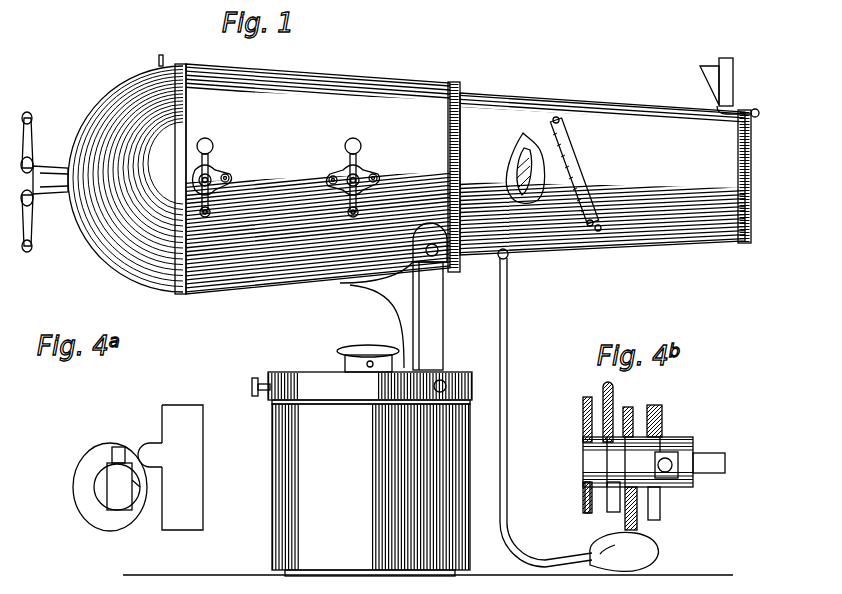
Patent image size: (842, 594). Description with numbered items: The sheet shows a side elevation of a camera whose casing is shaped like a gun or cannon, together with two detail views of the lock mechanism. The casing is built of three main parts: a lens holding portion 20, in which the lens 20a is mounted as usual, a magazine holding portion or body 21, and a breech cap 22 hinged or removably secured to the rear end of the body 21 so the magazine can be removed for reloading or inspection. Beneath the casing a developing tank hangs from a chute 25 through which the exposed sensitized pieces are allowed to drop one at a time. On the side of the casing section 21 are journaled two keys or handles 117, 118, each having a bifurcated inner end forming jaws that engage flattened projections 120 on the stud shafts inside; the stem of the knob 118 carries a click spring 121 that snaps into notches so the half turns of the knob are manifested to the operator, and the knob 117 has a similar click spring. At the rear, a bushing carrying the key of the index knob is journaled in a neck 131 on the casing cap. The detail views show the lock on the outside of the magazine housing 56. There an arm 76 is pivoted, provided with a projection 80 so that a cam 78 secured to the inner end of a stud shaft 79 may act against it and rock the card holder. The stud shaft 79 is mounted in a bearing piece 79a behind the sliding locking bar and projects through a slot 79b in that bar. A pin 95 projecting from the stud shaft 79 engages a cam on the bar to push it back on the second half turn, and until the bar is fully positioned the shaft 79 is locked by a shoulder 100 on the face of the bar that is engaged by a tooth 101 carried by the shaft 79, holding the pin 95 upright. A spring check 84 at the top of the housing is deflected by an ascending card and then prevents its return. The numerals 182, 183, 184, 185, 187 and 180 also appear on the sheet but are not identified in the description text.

In FIG. 1, the lens holding portion 20 is at (527, 104).
In FIG. 1, the lens 20a is at (528, 222).
In FIG. 1, the magazine holding portion or body 21 is at (330, 82).
In FIG. 1, the breech cap 22 is at (100, 250).
In FIG. 1, the chute 25 is at (433, 345).
In FIG. 1, the spring check 84 is at (448, 462).
In FIG. 1, the key or handle 117 is at (213, 146).
In FIG. 1, the key or handle 118 is at (362, 146).
In FIG. 1, the click spring 121 is at (360, 206).
In FIG. 1, the neck 131 is at (50, 168).
In FIG. 1, the bolt 182 is at (333, 184).
In FIG. 1, the bracket 183 is at (366, 180).
In FIG. 1, the pivot 184 is at (214, 212).
In FIG. 1, the bracket 185 is at (232, 178).
In FIG. 1, the hand wheel 187 is at (28, 248).
In FIG. 4b, the housing 56 is at (585, 410).
In FIG. 4a, the arm 76 is at (190, 500).
In FIG. 4b, the arm 76 is at (605, 392).
In FIG. 4a, the cam 78 is at (103, 520).
In FIG. 4b, the cam 78 is at (607, 490).
In FIG. 4a, the stud shaft 79 is at (98, 487).
In FIG. 4b, the stud shaft 79 is at (632, 465).
In FIG. 4b, the bearing piece 79a is at (630, 408).
In FIG. 4b, the slot 79b is at (662, 432).
In FIG. 4a, the projection 80 is at (170, 455).
In FIG. 4b, the projection 80 is at (600, 445).
In FIG. 4a, the pin 95 is at (116, 447).
In FIG. 4b, the pin 95 is at (668, 470).
In FIG. 4b, the shoulder 100 is at (668, 415).
In FIG. 4a, the tooth 101 is at (132, 487).
In FIG. 4b, the tooth 101 is at (676, 450).
In FIG. 4a, the flattened projection 120 is at (125, 508).
In FIG. 4b, the stem 180 is at (713, 462).